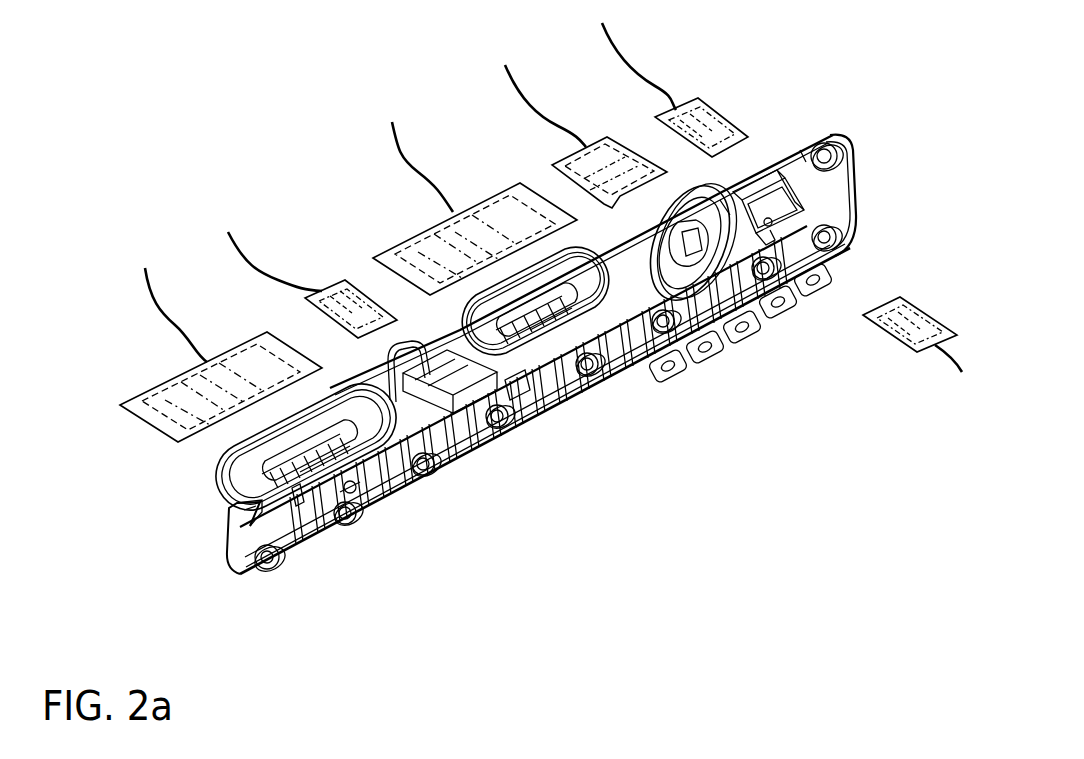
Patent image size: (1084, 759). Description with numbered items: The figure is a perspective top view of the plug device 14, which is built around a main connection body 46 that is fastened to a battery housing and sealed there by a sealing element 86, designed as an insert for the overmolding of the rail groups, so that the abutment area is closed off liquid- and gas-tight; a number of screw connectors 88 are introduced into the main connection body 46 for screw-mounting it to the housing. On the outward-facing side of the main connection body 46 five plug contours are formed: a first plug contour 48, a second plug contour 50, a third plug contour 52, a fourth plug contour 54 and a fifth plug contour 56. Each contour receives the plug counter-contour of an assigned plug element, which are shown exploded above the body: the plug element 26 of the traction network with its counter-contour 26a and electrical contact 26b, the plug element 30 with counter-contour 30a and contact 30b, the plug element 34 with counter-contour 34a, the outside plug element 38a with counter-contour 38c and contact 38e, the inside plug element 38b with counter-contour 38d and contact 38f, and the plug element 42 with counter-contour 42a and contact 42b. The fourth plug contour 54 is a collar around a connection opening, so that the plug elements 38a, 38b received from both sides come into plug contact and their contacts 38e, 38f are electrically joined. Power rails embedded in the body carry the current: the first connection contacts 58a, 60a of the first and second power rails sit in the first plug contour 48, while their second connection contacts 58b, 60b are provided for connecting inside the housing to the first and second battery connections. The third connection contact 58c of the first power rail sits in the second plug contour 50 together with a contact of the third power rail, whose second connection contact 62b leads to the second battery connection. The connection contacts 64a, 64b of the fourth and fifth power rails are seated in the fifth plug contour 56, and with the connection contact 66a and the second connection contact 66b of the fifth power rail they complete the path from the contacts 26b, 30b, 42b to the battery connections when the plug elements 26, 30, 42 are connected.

The plug device 14 is at (216, 610).
The plug element 26 is at (470, 208).
The plug counter-contour 26a is at (422, 246).
The electrical contact 26b is at (506, 228).
The plug element 30 is at (323, 311).
The plug counter-contour 30a is at (372, 310).
The electrical contact 30b is at (333, 298).
The plug element 34 is at (588, 147).
The plug counter-contour 34a is at (618, 157).
The plug element 38a is at (719, 116).
The plug element 38b is at (917, 311).
The plug counter-contour 38c is at (701, 114).
The plug counter-contour 38d is at (889, 332).
The electrical contact 38e is at (688, 116).
The electrical contact 38f is at (917, 332).
The plug element 42 is at (133, 411).
The plug counter-contour 42a is at (173, 422).
The electrical contact 42b is at (193, 393).
The main connection body 46 is at (265, 532).
The first plug contour 48 is at (515, 385).
The second plug contour 50 is at (433, 453).
The third plug contour 52 is at (707, 202).
The fourth plug contour 54 is at (797, 162).
The fifth plug contour 56 is at (297, 493).
The first connection contact 58a is at (497, 357).
The second connection contact 58b is at (757, 323).
The third connection contact 58c is at (413, 375).
The first connection contact 60a is at (605, 315).
The second connection contact 60b is at (718, 350).
The second connection contact 62b is at (838, 283).
The first connection contact 64a is at (337, 423).
The connection contact 64b is at (686, 369).
The boss 66a is at (350, 487).
The second connection contact 66b is at (795, 302).
The sealing element 86 is at (856, 190).
The screw connectors 88 is at (832, 153).